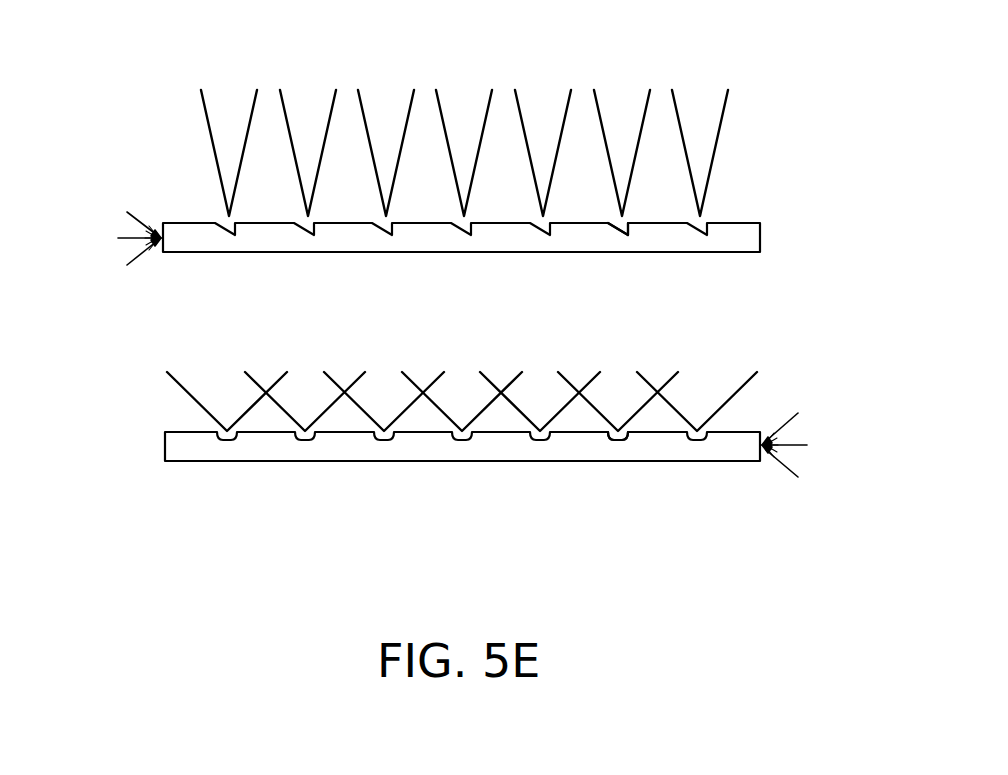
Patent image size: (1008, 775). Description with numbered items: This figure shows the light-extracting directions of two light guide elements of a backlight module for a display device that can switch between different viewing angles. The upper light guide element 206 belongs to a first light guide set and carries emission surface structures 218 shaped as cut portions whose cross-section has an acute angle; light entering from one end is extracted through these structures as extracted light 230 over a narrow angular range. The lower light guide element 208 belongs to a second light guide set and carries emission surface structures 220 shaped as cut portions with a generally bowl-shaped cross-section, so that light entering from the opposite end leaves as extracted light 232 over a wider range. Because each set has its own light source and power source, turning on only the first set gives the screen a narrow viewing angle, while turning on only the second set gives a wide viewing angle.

The light guide element 206 is at (750, 235).
The light guide element 208 is at (170, 448).
The emission surface structure 218 is at (620, 230).
The emission surface structure 220 is at (620, 437).
The extracted light 230 is at (476, 135).
The extracted light 232 is at (473, 383).